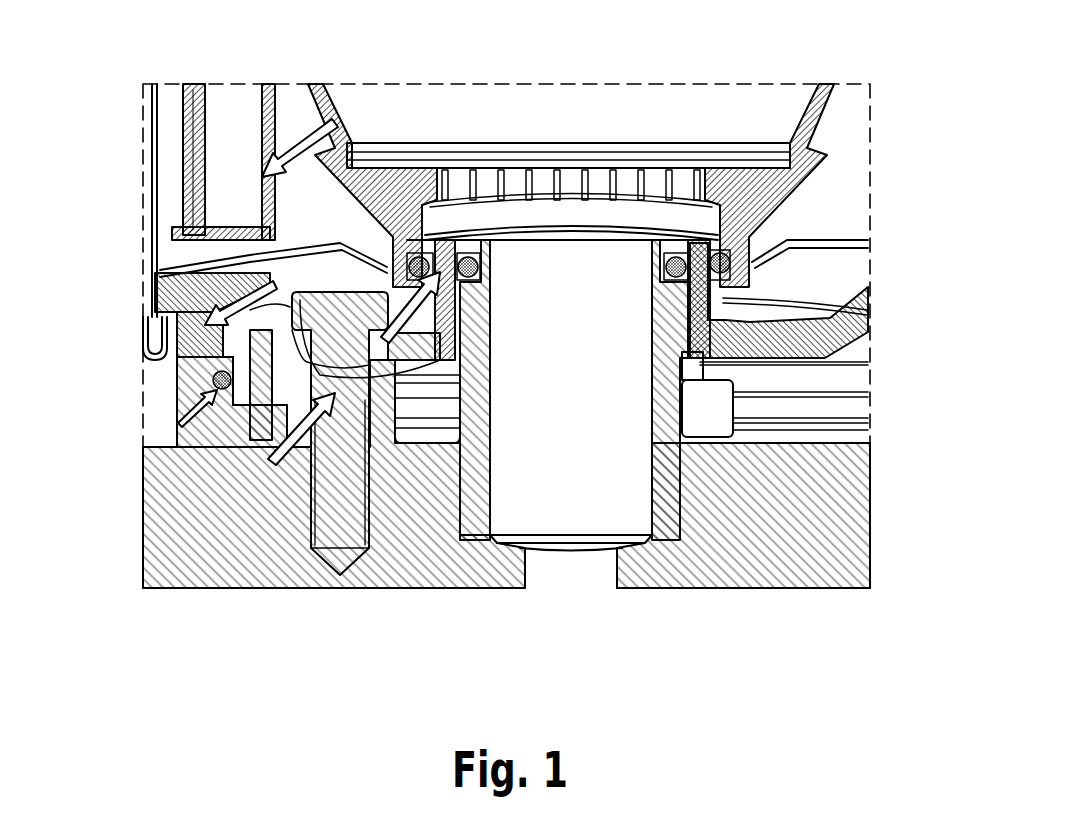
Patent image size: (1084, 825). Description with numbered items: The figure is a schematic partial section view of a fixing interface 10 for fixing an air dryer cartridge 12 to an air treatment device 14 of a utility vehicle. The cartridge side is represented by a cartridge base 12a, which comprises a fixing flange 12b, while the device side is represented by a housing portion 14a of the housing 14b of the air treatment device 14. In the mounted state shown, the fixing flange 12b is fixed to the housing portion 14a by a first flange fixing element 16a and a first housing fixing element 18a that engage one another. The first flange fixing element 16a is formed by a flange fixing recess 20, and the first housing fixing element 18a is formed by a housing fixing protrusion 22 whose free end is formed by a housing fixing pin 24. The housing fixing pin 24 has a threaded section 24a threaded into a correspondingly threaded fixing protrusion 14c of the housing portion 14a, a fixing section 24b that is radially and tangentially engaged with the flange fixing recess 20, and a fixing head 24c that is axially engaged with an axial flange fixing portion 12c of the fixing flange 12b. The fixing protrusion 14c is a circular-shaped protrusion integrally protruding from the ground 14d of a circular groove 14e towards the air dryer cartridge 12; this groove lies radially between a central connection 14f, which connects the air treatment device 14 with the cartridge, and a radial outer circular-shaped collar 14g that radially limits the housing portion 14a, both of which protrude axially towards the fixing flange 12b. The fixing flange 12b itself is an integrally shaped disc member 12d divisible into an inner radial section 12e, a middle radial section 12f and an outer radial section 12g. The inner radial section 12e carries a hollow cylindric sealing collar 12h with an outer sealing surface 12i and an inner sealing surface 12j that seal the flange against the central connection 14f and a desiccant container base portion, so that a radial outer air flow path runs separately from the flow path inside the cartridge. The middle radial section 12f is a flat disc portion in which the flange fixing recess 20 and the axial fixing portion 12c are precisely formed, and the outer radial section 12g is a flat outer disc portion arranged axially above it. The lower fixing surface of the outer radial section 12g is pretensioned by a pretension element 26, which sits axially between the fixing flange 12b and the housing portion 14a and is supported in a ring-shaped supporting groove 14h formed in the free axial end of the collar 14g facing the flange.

The fixing interface 10 is at (316, 276).
The air dryer cartridge 12 is at (165, 178).
The cartridge base 12a is at (277, 275).
The fixing flange 12b is at (737, 350).
The axial flange fixing portion 12c is at (160, 440).
The integrally shaped disc member 12d is at (808, 358).
The inner radial section 12e is at (753, 290).
The middle radial section 12f is at (817, 337).
The outer radial section 12g is at (160, 282).
The hollow cylindric sealing collar 12h is at (712, 253).
The outer sealing surface 12i is at (683, 305).
The inner sealing surface 12j is at (752, 280).
The air treatment device 14 is at (170, 568).
The housing portion 14a is at (255, 497).
The housing 14b is at (845, 545).
The fixing protrusion 14c is at (297, 393).
The ground 14d is at (700, 452).
The circular groove 14e is at (435, 440).
The central connection 14f is at (473, 445).
The radial outer circular-shaped collar 14g is at (233, 400).
The ring-shaped supporting groove 14h is at (205, 382).
The first flange fixing element 16a is at (400, 365).
The first housing fixing element 18a is at (375, 300).
The flange fixing recess 20 is at (380, 345).
The housing fixing protrusion 22 is at (425, 378).
The housing fixing pin 24 is at (353, 493).
The threaded section 24a is at (330, 528).
The fixing section 24b is at (400, 403).
The fixing head 24c is at (178, 296).
The pretension element 26 is at (160, 364).